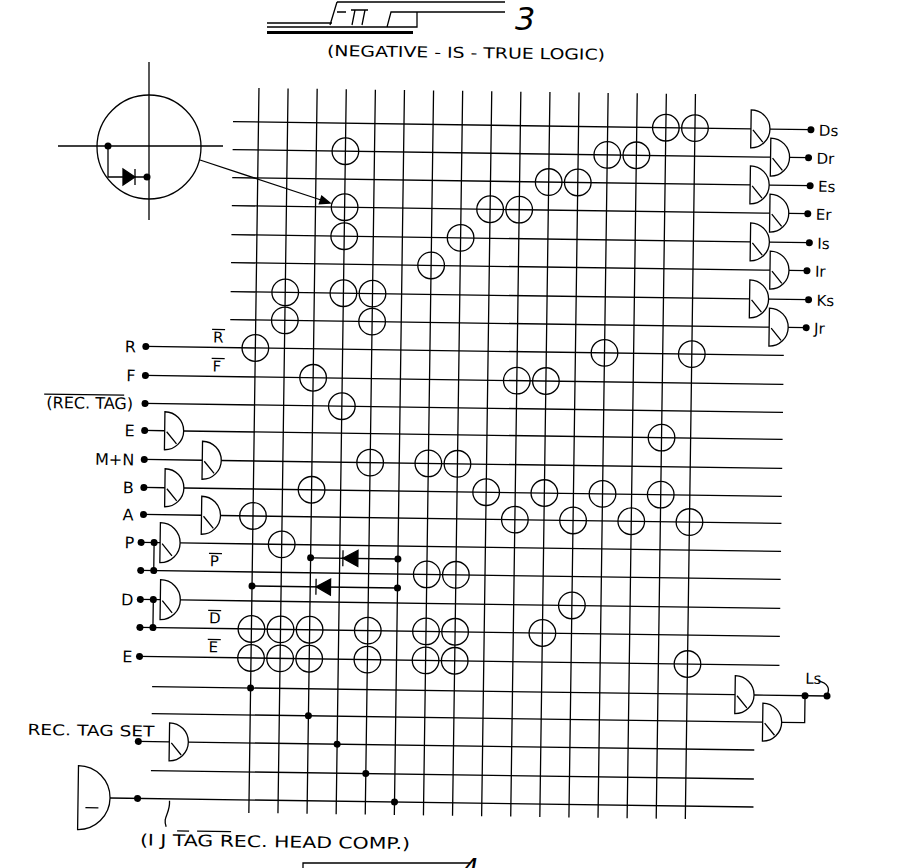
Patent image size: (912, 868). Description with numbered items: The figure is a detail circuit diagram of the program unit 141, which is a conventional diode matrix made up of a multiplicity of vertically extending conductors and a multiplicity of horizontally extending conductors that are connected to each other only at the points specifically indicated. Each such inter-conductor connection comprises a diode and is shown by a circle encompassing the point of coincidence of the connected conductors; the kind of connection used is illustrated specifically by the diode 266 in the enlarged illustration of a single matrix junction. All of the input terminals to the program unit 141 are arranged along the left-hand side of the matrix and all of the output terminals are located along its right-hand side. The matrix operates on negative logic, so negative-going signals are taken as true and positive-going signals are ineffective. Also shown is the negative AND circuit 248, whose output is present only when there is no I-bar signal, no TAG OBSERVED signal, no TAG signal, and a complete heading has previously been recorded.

The program unit 141 is at (249, 107).
The diode 266 is at (128, 186).
The negative AND circuit 248 is at (101, 832).